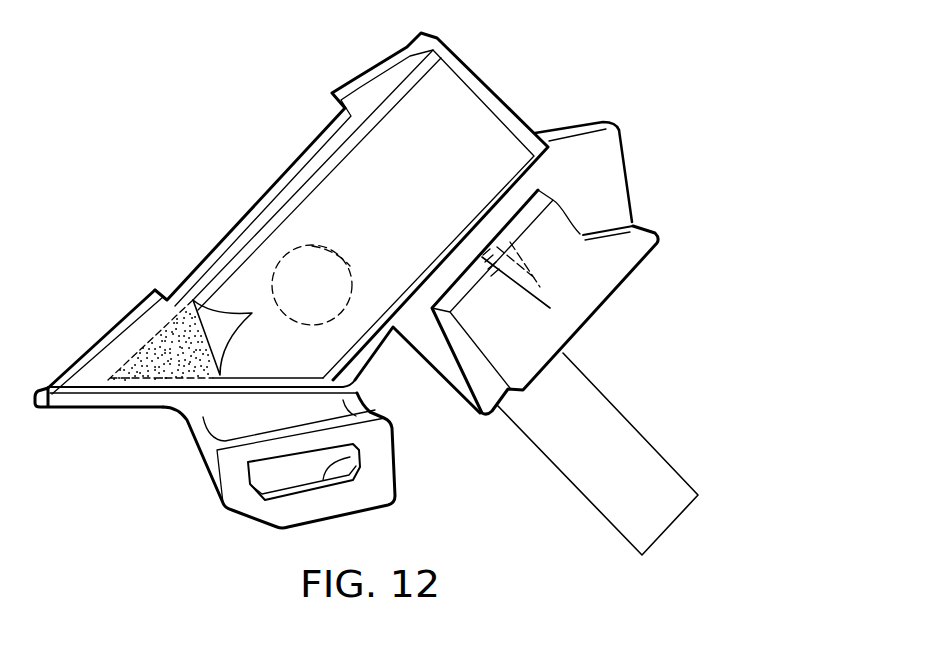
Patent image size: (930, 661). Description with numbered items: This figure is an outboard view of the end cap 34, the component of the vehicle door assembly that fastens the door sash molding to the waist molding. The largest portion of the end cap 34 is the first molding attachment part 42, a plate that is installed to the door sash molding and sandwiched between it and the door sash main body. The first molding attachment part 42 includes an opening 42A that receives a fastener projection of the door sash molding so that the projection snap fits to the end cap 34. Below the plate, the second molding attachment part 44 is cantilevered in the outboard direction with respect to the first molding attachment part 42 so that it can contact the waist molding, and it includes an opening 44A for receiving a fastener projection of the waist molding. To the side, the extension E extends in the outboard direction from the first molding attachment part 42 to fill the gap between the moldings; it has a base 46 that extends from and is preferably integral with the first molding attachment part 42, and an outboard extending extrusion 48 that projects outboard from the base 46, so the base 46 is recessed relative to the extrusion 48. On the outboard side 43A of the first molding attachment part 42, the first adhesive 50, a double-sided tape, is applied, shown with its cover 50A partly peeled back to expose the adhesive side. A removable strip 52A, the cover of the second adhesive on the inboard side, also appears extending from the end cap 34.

The end cap 34 is at (612, 21).
The first molding attachment part 42 is at (203, 251).
The opening 42A is at (348, 262).
The outboard side 43A is at (112, 357).
The second molding attachment part 44 is at (250, 510).
The opening 44A is at (357, 461).
The base 46 is at (597, 178).
The outboard extending extrusion 48 is at (587, 283).
The first adhesive 50 is at (162, 360).
The cover 50A is at (232, 347).
The removable strip 52A is at (620, 455).
The extension E is at (572, 126).